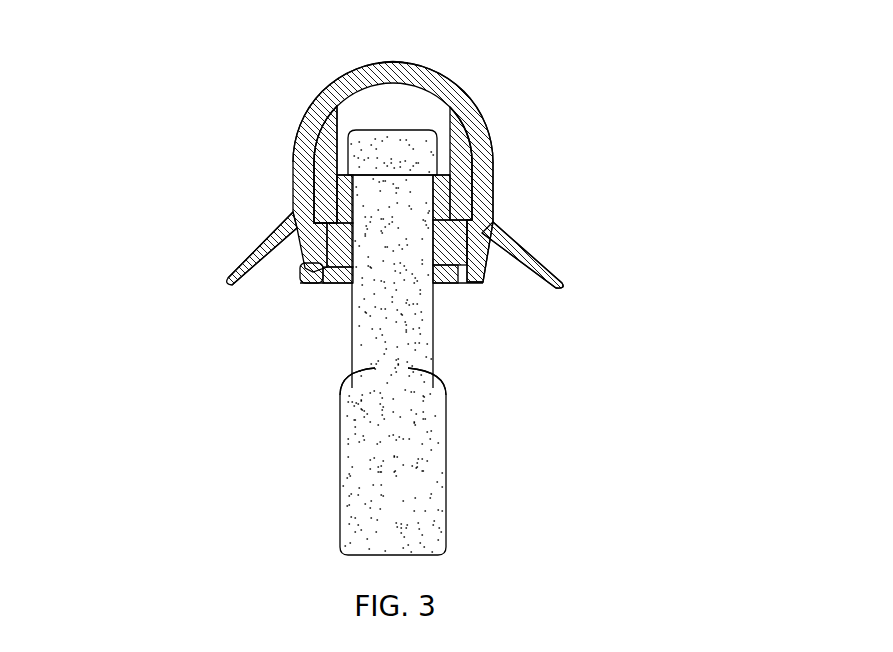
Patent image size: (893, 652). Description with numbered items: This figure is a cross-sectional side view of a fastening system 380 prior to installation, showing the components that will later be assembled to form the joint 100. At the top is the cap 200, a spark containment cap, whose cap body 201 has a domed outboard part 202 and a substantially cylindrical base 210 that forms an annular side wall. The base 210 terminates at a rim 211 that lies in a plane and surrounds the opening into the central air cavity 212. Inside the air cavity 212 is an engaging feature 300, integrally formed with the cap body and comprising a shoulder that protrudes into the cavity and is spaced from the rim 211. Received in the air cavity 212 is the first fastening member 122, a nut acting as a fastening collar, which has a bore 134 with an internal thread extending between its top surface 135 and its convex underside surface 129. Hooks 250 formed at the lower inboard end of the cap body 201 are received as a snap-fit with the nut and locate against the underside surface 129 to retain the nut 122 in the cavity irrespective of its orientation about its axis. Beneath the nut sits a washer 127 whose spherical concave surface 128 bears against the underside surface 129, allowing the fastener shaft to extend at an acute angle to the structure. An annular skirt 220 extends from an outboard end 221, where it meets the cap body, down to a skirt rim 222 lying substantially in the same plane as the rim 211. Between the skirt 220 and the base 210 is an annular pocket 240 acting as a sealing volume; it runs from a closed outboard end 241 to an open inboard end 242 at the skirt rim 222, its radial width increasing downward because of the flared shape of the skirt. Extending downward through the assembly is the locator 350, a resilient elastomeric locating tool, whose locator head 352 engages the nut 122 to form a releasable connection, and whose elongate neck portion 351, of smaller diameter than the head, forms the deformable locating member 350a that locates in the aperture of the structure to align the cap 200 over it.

The joint 100 is at (680, 68).
The fastening system 380 is at (687, 146).
The cap 200 is at (440, 72).
The cap body 201 is at (313, 103).
The domed outboard part 202 is at (387, 63).
The substantially cylindrical base 210 is at (480, 177).
The central air cavity 212 is at (437, 112).
The engaging feature 300 is at (458, 143).
The top surface 135 is at (322, 128).
The bore 134 is at (340, 195).
The first fastening member 122 is at (330, 185).
The locator head 352 is at (388, 147).
The locator 350 is at (430, 500).
The locating member 350a is at (347, 390).
The neck portion 351 is at (440, 397).
The annular skirt 220 is at (300, 255).
The closed outboard end 241 is at (272, 234).
The open inboard end 242 is at (243, 262).
The outboard end of skirt 221 is at (505, 224).
The skirt rim 222 is at (566, 287).
The annular pocket 240 is at (522, 278).
The hooks 250 is at (302, 274).
The spherical concave surface 128 is at (330, 284).
The rim 211 is at (313, 284).
The underside surface 129 is at (446, 285).
The washer 127 is at (475, 285).